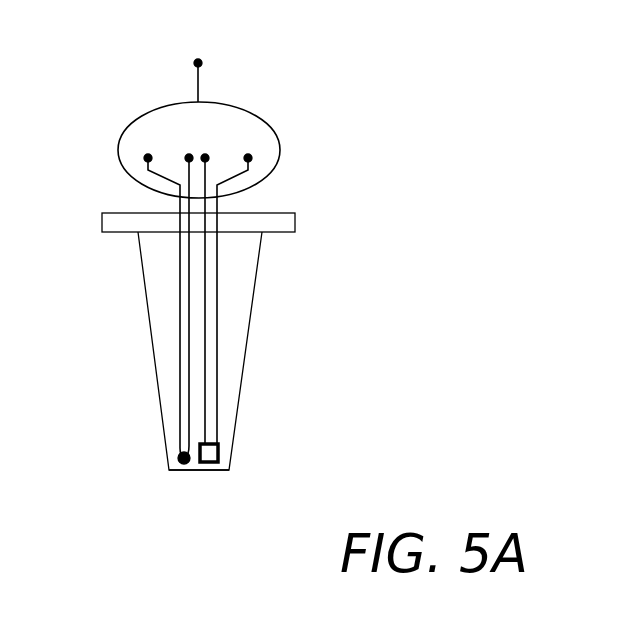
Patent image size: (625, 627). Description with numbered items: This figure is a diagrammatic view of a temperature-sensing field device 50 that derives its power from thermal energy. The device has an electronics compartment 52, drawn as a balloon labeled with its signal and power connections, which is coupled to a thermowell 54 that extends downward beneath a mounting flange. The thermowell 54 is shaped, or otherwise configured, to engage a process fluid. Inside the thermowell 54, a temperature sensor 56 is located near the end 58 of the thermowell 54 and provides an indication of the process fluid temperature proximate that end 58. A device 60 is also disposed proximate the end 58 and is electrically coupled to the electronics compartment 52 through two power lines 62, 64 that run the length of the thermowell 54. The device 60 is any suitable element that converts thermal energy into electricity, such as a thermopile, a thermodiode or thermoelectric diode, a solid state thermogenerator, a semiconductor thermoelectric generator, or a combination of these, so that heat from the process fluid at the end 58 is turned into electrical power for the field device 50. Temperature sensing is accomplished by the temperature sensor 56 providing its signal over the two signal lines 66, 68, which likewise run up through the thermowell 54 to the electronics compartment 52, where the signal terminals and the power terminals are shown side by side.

The temperature-sensing field device 50 is at (258, 102).
The electronics compartment 52 is at (207, 101).
The thermowell 54 is at (259, 261).
The temperature sensor 56 is at (184, 465).
The end 58 is at (190, 470).
The device 60 is at (219, 457).
The power line 62 is at (222, 184).
The power line 64 is at (218, 200).
The signal line 66 is at (180, 253).
The signal line 68 is at (191, 300).